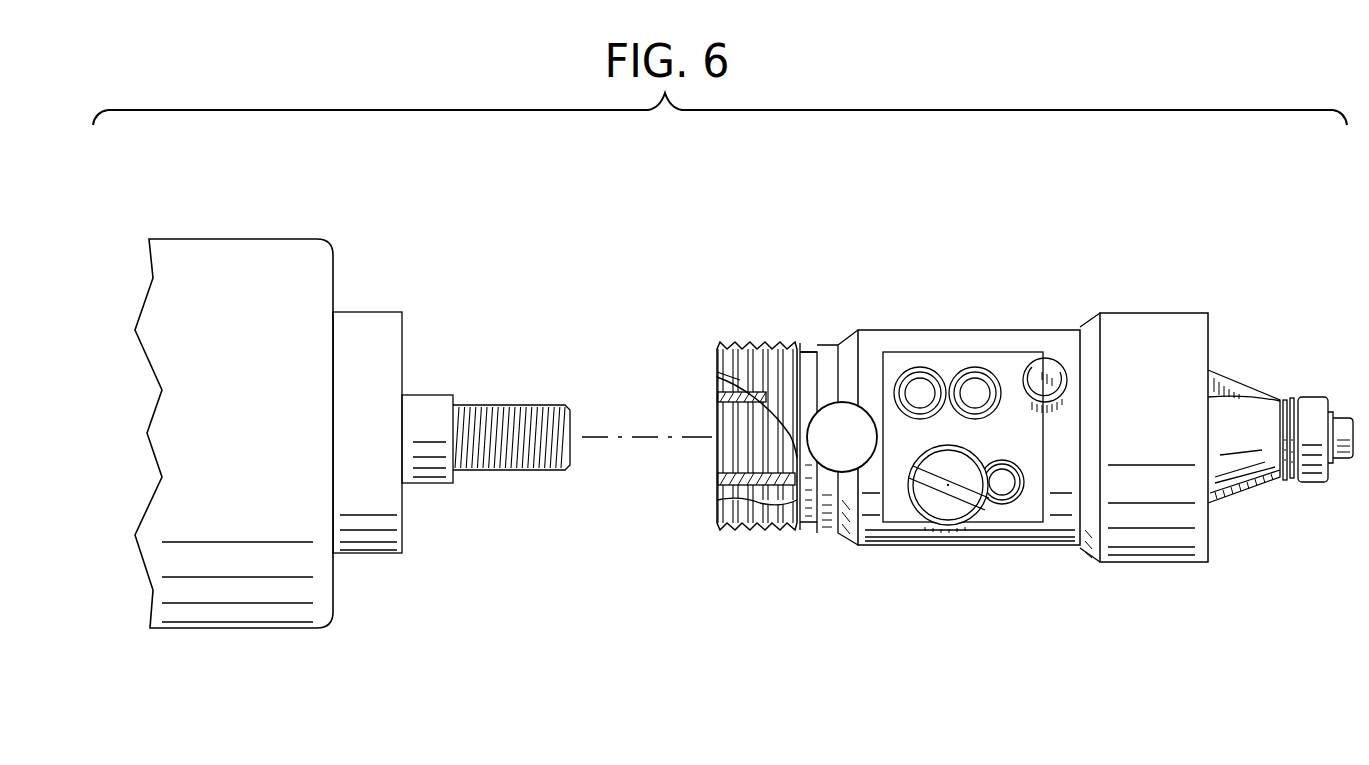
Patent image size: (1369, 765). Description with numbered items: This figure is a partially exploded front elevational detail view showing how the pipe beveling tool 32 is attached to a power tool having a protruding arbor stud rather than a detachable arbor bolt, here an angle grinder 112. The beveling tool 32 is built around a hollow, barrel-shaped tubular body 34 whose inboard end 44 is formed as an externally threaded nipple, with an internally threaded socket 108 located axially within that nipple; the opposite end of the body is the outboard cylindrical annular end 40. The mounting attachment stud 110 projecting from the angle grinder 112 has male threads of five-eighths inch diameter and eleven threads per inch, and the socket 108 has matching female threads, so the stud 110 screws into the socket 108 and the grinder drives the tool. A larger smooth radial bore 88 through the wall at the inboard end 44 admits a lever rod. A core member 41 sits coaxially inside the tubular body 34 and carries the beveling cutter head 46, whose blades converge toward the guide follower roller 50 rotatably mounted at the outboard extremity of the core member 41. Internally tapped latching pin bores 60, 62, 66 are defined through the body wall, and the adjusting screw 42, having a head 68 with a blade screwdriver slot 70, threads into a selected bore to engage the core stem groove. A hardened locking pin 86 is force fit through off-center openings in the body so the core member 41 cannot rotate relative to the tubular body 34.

The angle grinder 112 is at (254, 238).
The mounting attachment stud 110 is at (491, 405).
The internally threaded socket 108 is at (718, 458).
The inboard end 44 is at (741, 343).
The radial bore 88 is at (836, 400).
The pipe beveling tool 32 is at (940, 392).
The adjusting screw 42 is at (905, 512).
The latching pin bore 66 is at (917, 387).
The latching pin bore 62 is at (973, 387).
The hardened locking pin 86 is at (1048, 370).
The blade screwdriver slot 70 is at (947, 483).
The latching pin bore 60 is at (1017, 503).
The head 68 is at (943, 510).
The tubular body 34 is at (1216, 407).
The outboard cylindrical annular end 40 is at (1210, 540).
The beveling cutter head 46 is at (1240, 428).
The core member 41 is at (1272, 493).
The guide follower roller 50 is at (1310, 405).